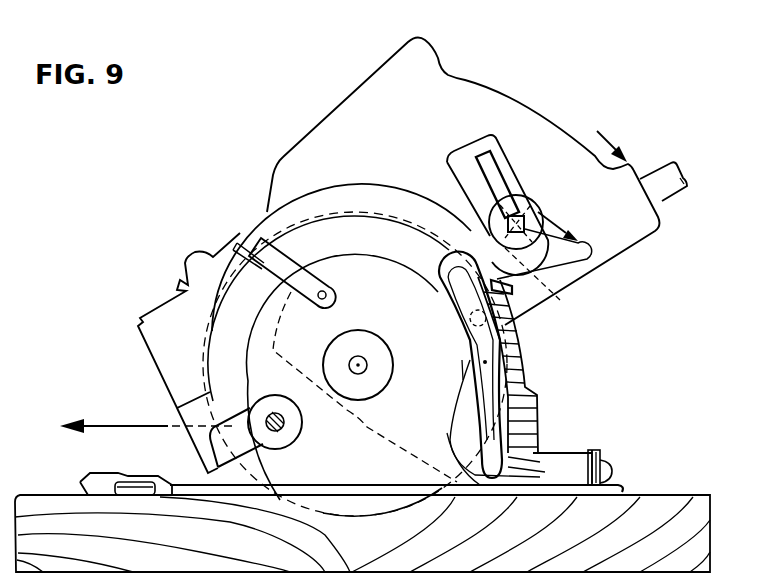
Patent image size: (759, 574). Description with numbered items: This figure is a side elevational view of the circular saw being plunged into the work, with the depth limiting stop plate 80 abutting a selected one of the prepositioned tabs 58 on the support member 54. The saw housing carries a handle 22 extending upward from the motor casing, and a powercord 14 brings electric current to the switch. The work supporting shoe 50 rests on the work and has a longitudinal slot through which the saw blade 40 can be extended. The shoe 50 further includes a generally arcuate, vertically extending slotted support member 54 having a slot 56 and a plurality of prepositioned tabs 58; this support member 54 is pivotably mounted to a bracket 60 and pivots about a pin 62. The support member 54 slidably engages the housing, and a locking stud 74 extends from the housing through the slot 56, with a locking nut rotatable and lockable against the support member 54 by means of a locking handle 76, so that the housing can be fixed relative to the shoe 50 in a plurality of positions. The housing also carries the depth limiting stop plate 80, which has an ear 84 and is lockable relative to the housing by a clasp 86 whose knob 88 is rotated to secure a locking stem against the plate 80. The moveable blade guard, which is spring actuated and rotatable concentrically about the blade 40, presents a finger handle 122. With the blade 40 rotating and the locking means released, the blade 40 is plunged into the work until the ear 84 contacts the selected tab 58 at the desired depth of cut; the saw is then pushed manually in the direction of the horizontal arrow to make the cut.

The powercord 14 is at (670, 192).
The handle 22 is at (455, 44).
The saw blade 40 is at (373, 520).
The work supporting shoe 50 is at (102, 477).
The slotted support member 54 is at (451, 264).
The slot 56 is at (485, 362).
The prepositioned tabs 58 is at (515, 308).
The bracket 60 is at (598, 452).
The pin 62 is at (613, 470).
The locking stud 74 is at (466, 330).
The locking handle 76 is at (573, 257).
The depth limiting stop plate 80 is at (460, 157).
The ear 84 is at (512, 289).
The clasp 86 is at (522, 198).
The knob 88 is at (538, 212).
The finger handle 122 is at (250, 240).